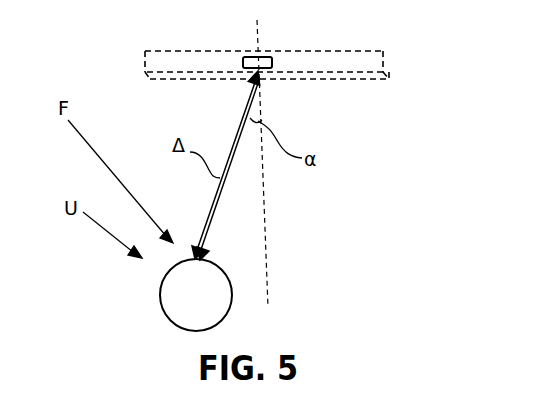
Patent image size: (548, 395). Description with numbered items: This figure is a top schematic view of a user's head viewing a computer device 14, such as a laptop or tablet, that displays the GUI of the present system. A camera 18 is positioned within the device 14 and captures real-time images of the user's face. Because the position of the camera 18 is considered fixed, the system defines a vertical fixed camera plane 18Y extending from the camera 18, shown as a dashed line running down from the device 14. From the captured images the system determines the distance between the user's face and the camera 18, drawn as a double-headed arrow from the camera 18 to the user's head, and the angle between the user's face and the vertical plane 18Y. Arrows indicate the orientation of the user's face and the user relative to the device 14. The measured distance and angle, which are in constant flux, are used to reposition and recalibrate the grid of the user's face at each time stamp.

The device 14 is at (389, 70).
The camera 18 is at (272, 61).
The vertical fixed camera plane 18Y is at (264, 220).